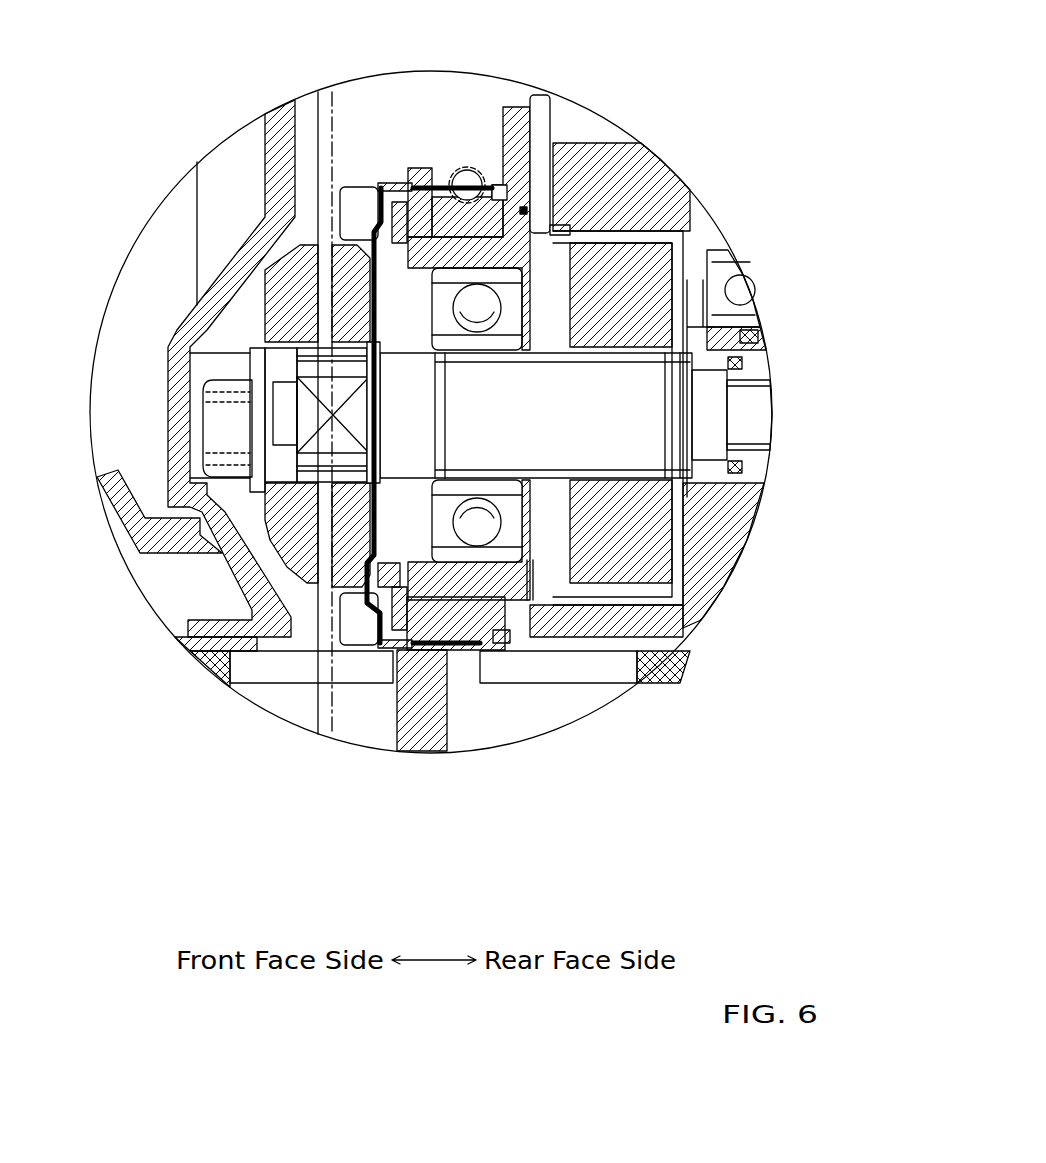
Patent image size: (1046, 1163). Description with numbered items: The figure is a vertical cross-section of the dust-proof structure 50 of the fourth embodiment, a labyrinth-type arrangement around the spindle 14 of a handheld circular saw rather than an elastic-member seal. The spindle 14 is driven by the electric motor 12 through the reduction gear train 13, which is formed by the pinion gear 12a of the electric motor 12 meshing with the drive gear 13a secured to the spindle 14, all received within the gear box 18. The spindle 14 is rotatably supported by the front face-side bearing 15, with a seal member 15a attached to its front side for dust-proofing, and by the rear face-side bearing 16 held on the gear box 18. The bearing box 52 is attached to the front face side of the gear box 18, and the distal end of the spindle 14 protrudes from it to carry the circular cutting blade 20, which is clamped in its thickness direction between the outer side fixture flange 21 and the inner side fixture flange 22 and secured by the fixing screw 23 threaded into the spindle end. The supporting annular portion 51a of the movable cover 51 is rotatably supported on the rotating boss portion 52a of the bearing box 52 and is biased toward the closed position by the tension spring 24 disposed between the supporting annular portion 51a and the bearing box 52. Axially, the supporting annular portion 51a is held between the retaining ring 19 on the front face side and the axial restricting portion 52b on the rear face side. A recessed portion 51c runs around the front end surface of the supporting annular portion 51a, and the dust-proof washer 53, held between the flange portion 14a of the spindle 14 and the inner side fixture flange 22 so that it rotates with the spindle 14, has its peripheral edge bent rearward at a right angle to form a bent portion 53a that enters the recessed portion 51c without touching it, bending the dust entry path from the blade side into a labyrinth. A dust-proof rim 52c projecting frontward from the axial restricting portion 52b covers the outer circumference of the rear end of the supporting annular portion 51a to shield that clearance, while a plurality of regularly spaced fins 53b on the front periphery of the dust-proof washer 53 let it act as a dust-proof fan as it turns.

The electric motor 12 is at (676, 182).
The pinion gear 12a is at (663, 177).
The reduction gear train 13 is at (641, 463).
The drive gear 13a is at (628, 545).
The spindle 14 is at (600, 477).
The flange portion 14a is at (405, 330).
The bearing 15 is at (309, 448).
The seal member 15a is at (382, 317).
The bearing 16 is at (758, 462).
The gear box 18 is at (527, 185).
The retaining ring 19 is at (357, 212).
The cutting blade 20 is at (326, 672).
The outer side fixture flange 21 is at (307, 252).
The inner side fixture flange 22 is at (218, 556).
The fixing screw 23 is at (218, 415).
The tension spring 24 is at (467, 168).
The dust-proof structure 50 is at (378, 426).
The movable cover 51 is at (438, 426).
The supporting annular portion 51a is at (432, 200).
The recessed portion 51c is at (413, 173).
The bearing box 52 is at (406, 407).
The rotating boss portion 52a is at (497, 197).
The axial restricting portion 52b is at (560, 165).
The dust-proof rim 52c is at (533, 130).
The dust-proof washer 53 is at (239, 421).
The bent portion 53a is at (397, 187).
The fins 53b is at (340, 262).